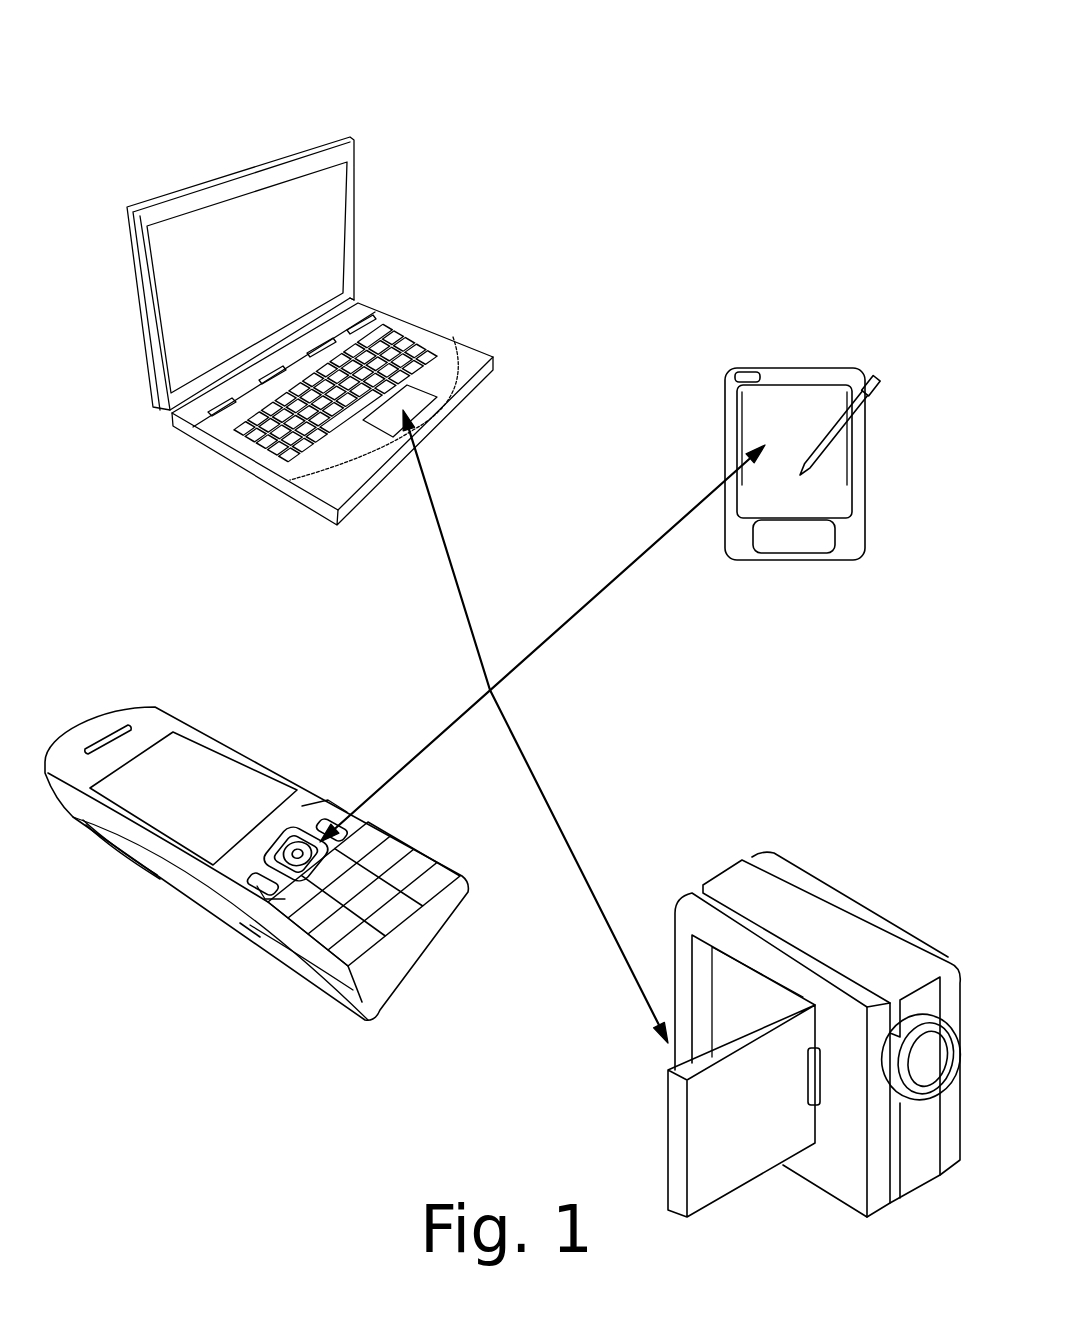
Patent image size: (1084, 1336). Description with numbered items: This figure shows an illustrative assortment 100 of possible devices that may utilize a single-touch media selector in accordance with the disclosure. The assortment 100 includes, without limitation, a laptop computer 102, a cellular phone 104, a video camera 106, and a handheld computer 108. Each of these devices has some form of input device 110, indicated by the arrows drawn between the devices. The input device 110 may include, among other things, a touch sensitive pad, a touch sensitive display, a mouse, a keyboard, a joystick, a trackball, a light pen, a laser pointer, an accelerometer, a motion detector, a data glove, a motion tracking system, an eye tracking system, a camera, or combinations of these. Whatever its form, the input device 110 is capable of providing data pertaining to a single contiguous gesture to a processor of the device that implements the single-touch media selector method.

The assortment of possible devices 100 is at (812, 43).
The laptop computer 102 is at (383, 310).
The cellular phone 104 is at (207, 730).
The video camera 106 is at (780, 856).
The handheld computer 108 is at (793, 367).
The input device 110 is at (490, 690).